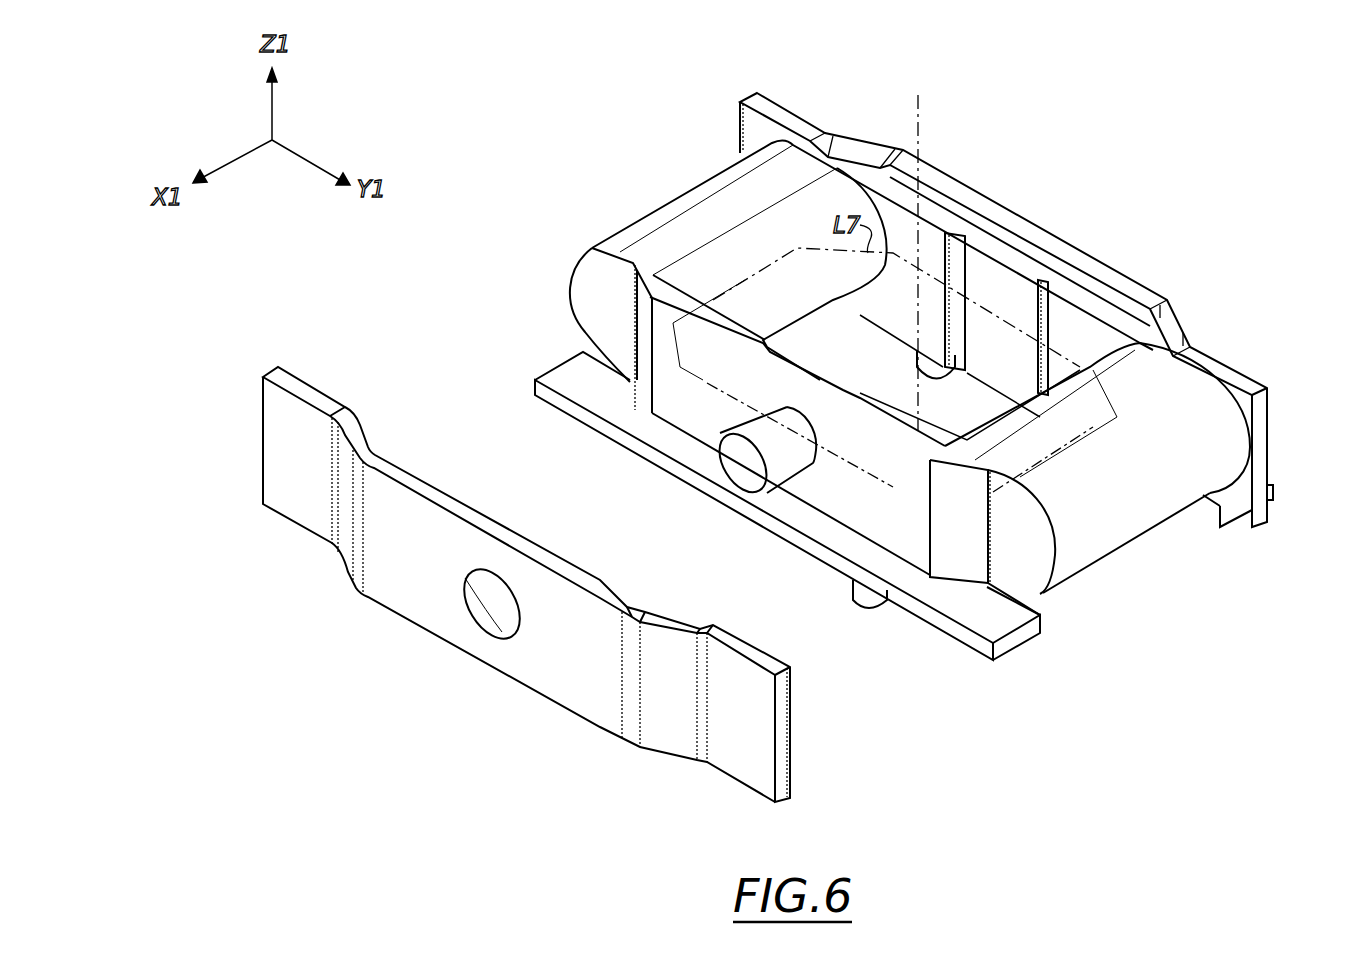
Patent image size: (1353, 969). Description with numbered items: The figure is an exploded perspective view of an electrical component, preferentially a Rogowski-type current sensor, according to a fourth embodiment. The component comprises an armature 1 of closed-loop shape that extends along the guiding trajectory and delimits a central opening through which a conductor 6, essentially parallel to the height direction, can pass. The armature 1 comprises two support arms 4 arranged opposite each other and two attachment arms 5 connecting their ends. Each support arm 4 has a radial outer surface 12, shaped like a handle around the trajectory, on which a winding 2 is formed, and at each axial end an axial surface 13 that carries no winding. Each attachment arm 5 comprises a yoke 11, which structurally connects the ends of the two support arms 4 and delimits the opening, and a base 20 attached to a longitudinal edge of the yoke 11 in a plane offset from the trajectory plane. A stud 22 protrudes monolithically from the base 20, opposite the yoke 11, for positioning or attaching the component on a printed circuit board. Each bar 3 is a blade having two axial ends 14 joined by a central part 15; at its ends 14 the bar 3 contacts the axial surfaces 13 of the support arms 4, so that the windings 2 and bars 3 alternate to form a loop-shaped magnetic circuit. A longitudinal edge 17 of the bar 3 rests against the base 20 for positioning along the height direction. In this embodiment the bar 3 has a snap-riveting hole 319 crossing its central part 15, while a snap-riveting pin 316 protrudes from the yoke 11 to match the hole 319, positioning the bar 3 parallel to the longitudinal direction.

The armature 1 is at (622, 330).
The winding 2 is at (706, 177).
The bar 3 is at (1030, 230).
The support arm 4 is at (600, 222).
The attachment arm 5 is at (1026, 290).
The conductor 6 is at (918, 105).
The yoke 11 is at (985, 275).
The radial outer surface 12 is at (662, 212).
The axial surface 13 is at (622, 297).
The axial end 14 is at (790, 97).
The central part 15 is at (1130, 290).
The longitudinal edge 17 is at (630, 695).
The base 20 is at (995, 605).
The stud 22 is at (870, 602).
The snap-riveting pin 316 is at (745, 465).
The snap-riveting hole 319 is at (488, 611).